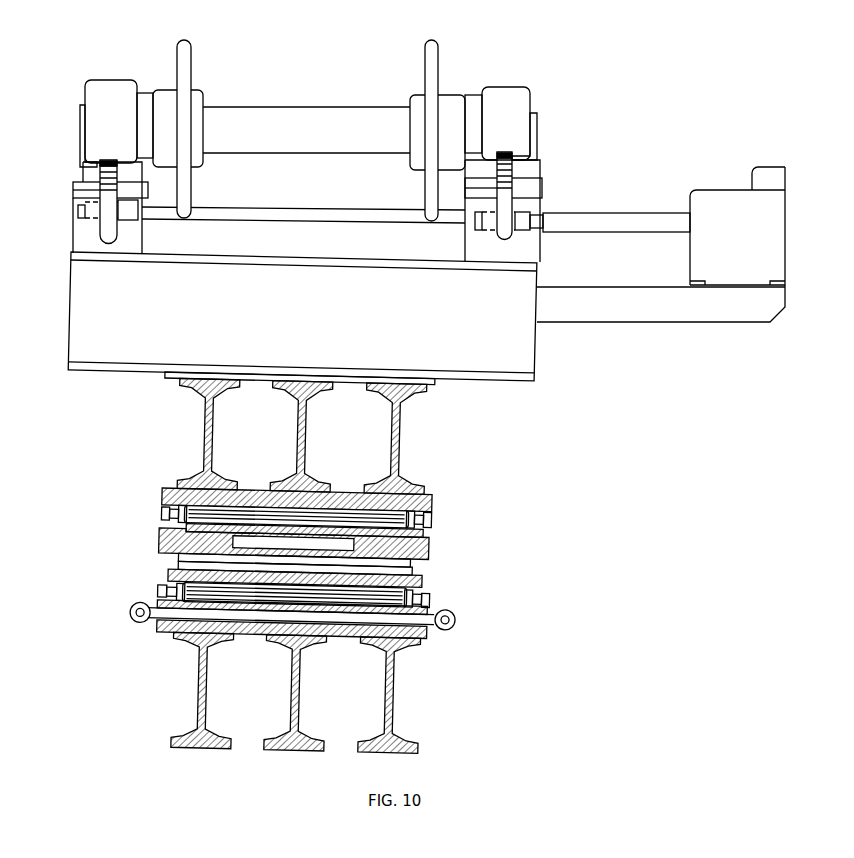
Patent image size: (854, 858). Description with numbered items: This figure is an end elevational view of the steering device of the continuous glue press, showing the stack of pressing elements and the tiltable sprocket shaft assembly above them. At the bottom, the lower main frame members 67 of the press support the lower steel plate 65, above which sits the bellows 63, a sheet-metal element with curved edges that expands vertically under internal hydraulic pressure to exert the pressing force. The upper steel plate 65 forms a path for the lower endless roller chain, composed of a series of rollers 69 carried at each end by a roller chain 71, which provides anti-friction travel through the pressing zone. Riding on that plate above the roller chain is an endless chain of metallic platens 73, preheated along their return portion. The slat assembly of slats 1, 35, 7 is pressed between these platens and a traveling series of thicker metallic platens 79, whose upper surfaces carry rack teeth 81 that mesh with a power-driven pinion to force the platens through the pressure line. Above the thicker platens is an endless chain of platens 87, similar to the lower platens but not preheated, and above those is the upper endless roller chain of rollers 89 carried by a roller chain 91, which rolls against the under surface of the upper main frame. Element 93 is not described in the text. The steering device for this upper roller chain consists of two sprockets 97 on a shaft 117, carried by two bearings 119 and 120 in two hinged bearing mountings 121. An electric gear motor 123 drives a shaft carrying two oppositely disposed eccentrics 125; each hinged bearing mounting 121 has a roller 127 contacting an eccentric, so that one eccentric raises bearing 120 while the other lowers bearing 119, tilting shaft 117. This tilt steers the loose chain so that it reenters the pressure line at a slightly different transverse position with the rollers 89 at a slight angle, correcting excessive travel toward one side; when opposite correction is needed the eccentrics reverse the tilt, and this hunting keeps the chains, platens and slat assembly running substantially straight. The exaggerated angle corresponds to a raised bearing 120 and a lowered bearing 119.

The slat 1 is at (189, 558).
The slat 7 is at (183, 575).
The slat 35 is at (420, 563).
The bellows 63 is at (466, 614).
The steel plate 65 is at (165, 606).
The lower main frame member 67 is at (308, 688).
The roller 69 is at (273, 592).
The roller chain 71 is at (440, 590).
The platen 73 is at (433, 579).
The platen 79 is at (166, 532).
The rack teeth 81 is at (356, 539).
The platen 87 is at (432, 526).
The roller 89 is at (334, 511).
The roller chain 91 is at (433, 510).
The plate 93 is at (253, 498).
The sprocket 97 is at (192, 65).
The shaft 117 is at (298, 107).
The bearing 119 is at (124, 80).
The bearing 120 is at (502, 85).
The hinged bearing mounting 121 is at (73, 195).
The electric gear motor 123 is at (690, 257).
The eccentric 125 is at (98, 225).
The roller 127 is at (108, 160).